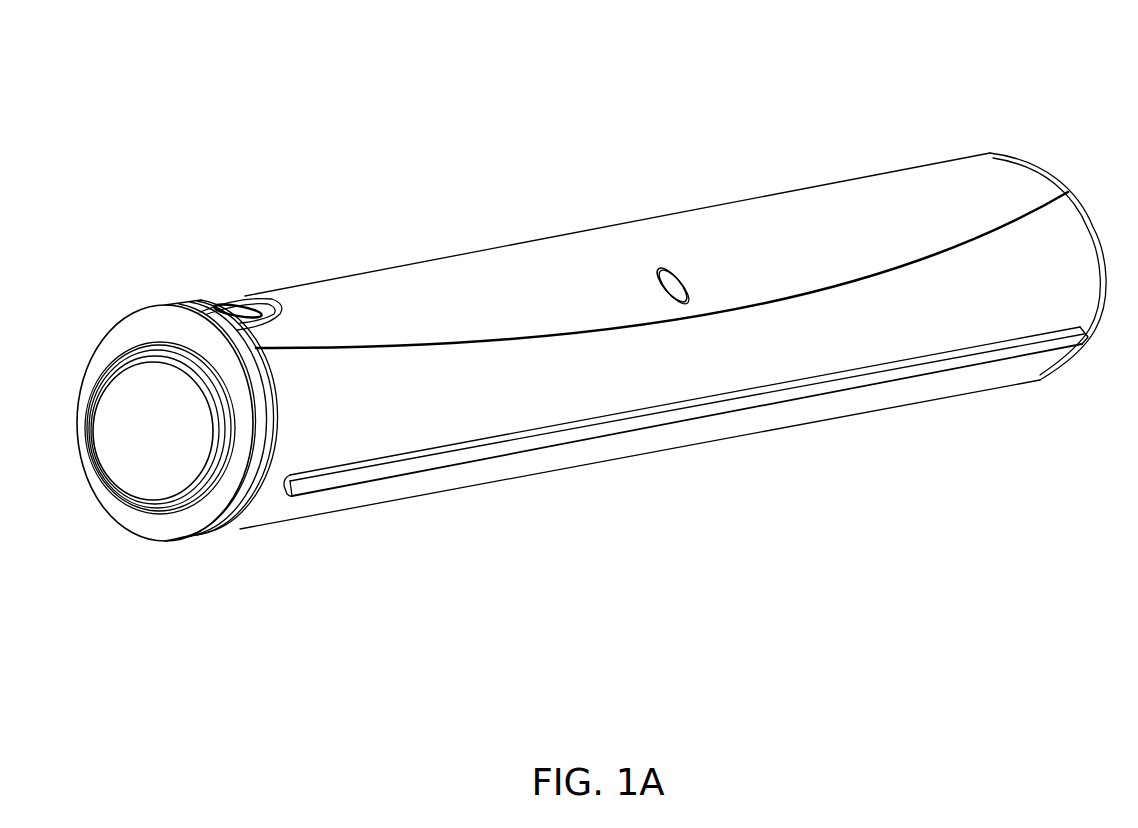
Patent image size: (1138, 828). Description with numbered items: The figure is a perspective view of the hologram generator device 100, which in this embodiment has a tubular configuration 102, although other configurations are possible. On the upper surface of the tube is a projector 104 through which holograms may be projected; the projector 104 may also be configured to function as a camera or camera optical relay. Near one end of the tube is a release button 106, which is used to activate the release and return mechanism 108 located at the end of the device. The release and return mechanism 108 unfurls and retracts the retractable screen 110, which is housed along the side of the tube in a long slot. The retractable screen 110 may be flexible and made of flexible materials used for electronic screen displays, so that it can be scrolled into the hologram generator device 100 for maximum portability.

The hologram generator device 100 is at (657, 160).
The tubular configuration 102 is at (840, 181).
The projector 104 is at (660, 268).
The release button 106 is at (243, 297).
The release & return mechanism 108 is at (173, 307).
The retractable screen 110 is at (533, 463).